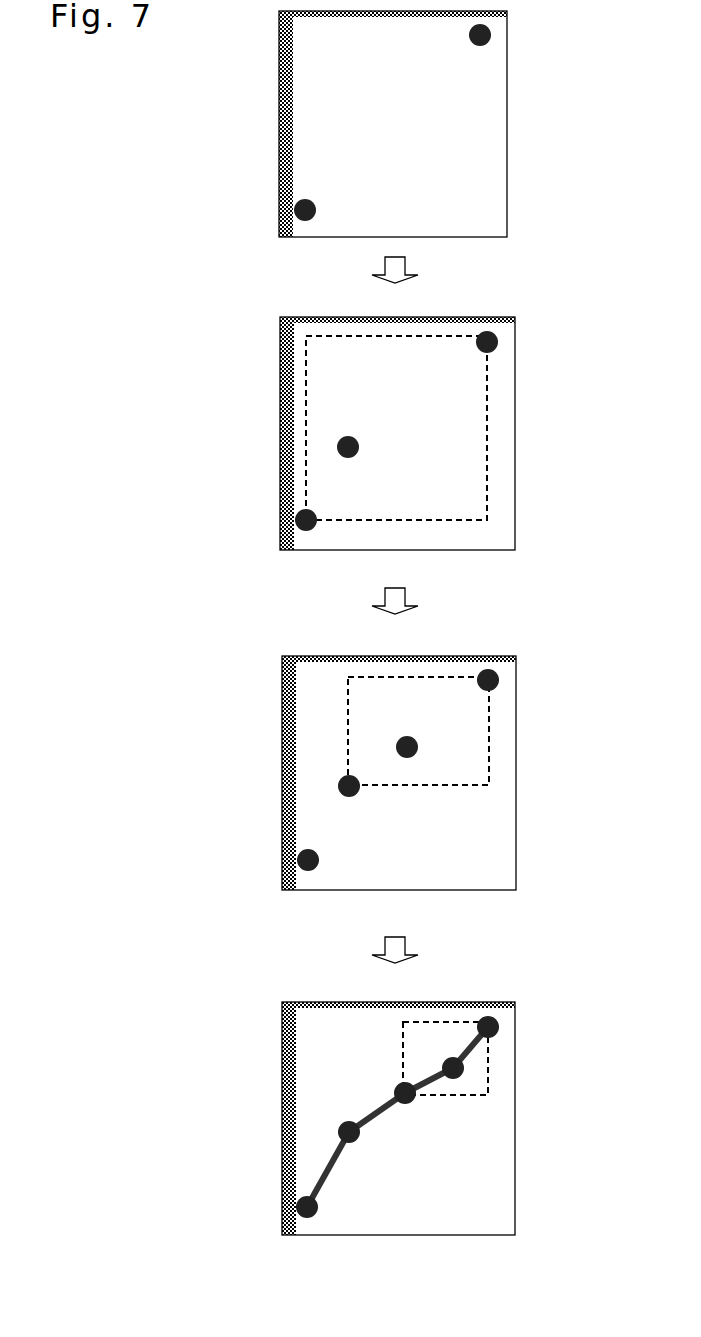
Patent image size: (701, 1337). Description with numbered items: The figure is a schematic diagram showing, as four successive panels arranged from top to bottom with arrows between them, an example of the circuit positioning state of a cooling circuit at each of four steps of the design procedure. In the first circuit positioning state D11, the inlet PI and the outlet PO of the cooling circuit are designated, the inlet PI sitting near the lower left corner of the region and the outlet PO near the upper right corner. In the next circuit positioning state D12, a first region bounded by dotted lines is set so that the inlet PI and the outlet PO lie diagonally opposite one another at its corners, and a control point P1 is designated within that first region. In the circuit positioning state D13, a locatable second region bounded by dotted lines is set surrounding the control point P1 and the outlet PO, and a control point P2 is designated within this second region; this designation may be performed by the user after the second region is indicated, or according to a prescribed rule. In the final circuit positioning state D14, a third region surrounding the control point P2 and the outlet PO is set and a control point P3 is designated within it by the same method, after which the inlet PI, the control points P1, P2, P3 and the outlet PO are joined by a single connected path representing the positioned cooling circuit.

The circuit positioning state D11 is at (512, 83).
The circuit positioning state D12 is at (515, 425).
The circuit positioning state D13 is at (516, 783).
The circuit positioning state D14 is at (515, 1157).
The outlet PO is at (488, 533).
The inlet PI is at (325, 713).
The control point P1 is at (353, 777).
The control point P2 is at (429, 934).
The control point P3 is at (463, 1069).